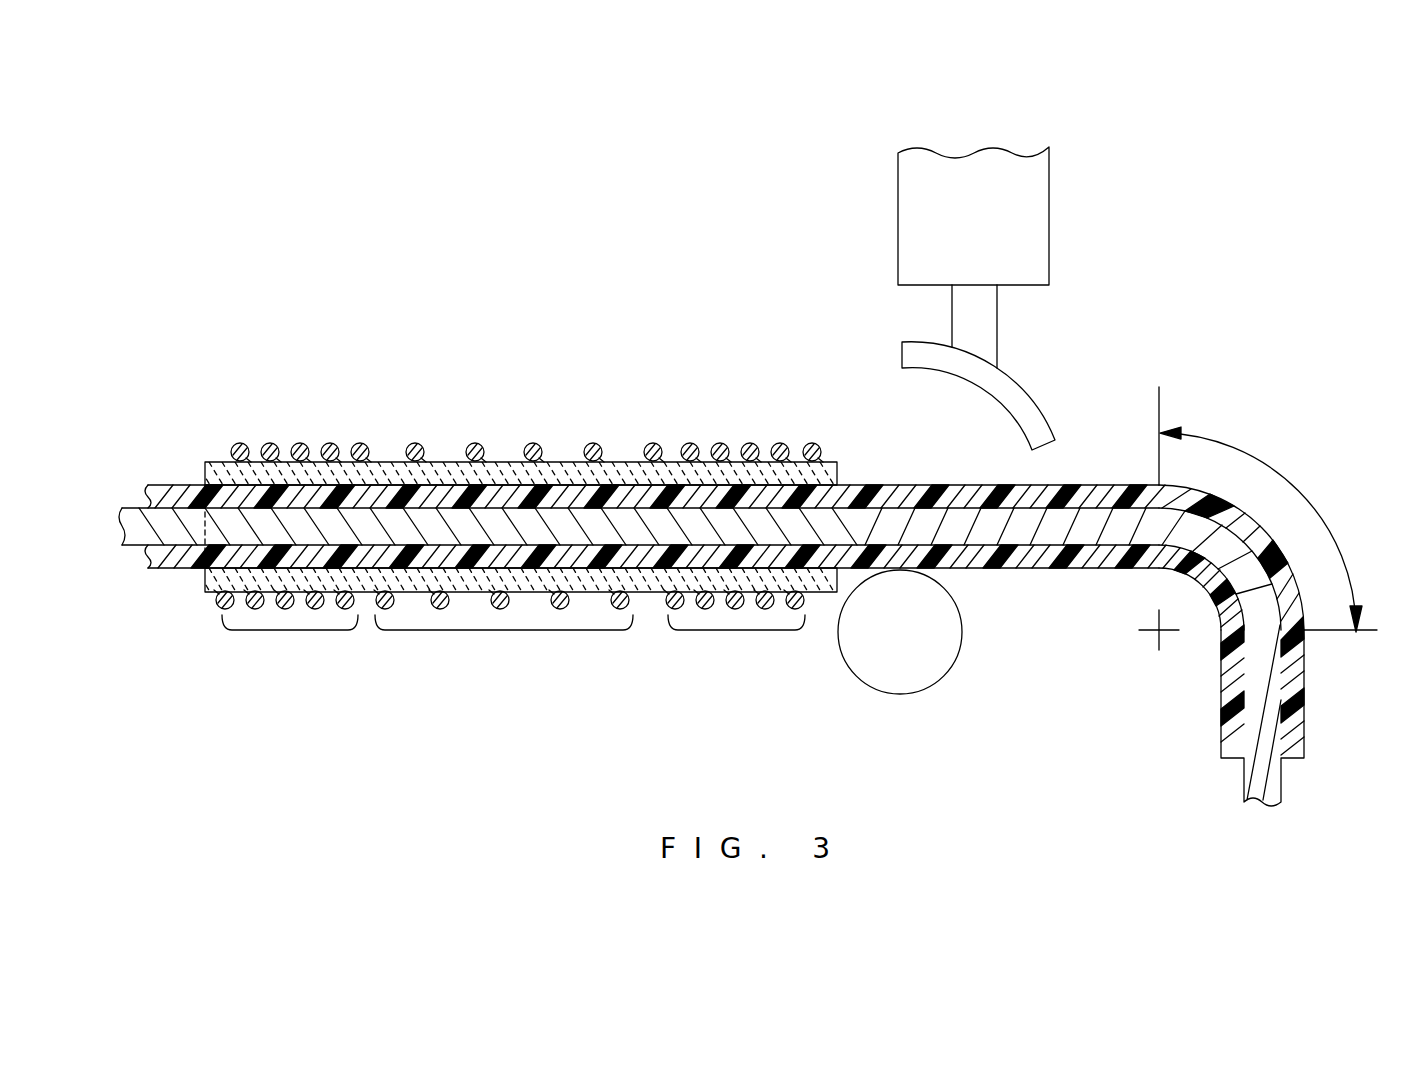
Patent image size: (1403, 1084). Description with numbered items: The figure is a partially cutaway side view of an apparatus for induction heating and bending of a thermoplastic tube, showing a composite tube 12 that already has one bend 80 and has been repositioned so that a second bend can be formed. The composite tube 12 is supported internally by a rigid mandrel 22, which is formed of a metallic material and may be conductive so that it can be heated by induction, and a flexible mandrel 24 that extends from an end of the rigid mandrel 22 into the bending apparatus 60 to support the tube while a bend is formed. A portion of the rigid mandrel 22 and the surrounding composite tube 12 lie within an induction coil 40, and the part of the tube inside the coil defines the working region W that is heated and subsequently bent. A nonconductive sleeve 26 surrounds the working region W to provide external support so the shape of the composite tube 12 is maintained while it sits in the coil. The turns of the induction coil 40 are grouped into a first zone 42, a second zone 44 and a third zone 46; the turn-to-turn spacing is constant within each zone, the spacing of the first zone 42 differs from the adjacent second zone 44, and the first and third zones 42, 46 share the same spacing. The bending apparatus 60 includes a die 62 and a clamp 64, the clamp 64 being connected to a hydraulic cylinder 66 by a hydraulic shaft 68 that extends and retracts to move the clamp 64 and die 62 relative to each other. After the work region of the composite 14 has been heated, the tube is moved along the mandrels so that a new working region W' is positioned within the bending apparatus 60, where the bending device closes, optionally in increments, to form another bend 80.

The composite tube 12 is at (165, 490).
The rigid mandrel 22 is at (503, 520).
The flexible mandrel 24 is at (1040, 508).
The sleeve 26 is at (207, 568).
The working region W is at (646, 483).
The new working region W' is at (1025, 566).
The bend 80 is at (1215, 522).
The composite 14 is at (1305, 692).
The induction coil 40 is at (445, 712).
The first zone 42 is at (288, 630).
The second zone 44 is at (505, 630).
The third zone 46 is at (737, 630).
The bending apparatus 60 is at (1188, 287).
The die 62 is at (915, 678).
The clamp 64 is at (918, 342).
The hydraulic cylinder 66 is at (1049, 230).
The hydraulic shaft 68 is at (997, 336).